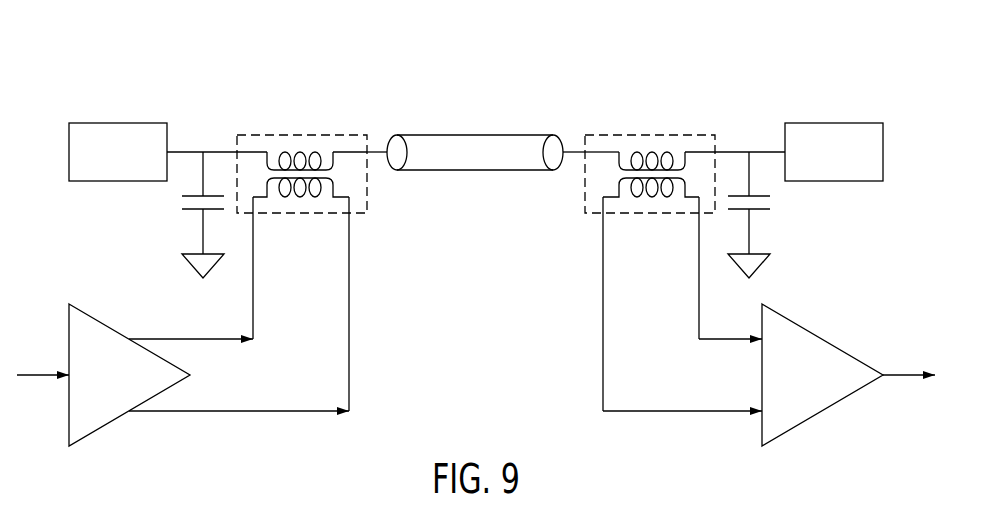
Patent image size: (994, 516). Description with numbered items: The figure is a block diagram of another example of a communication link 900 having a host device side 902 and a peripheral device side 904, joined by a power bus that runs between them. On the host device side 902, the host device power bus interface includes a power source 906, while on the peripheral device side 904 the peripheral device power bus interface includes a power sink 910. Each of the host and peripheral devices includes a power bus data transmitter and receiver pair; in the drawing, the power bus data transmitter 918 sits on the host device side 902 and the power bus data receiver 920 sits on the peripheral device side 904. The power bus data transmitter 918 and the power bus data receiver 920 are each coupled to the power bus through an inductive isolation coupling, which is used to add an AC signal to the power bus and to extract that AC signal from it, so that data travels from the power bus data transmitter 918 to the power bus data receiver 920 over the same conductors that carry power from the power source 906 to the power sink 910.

The communication link 900 is at (157, 45).
The host device side 902 is at (358, 93).
The peripheral device side 904 is at (593, 93).
The power source 906 is at (119, 123).
The power sink 910 is at (838, 123).
The power bus data transmitter 918 is at (122, 333).
The power bus data receiver 920 is at (828, 341).